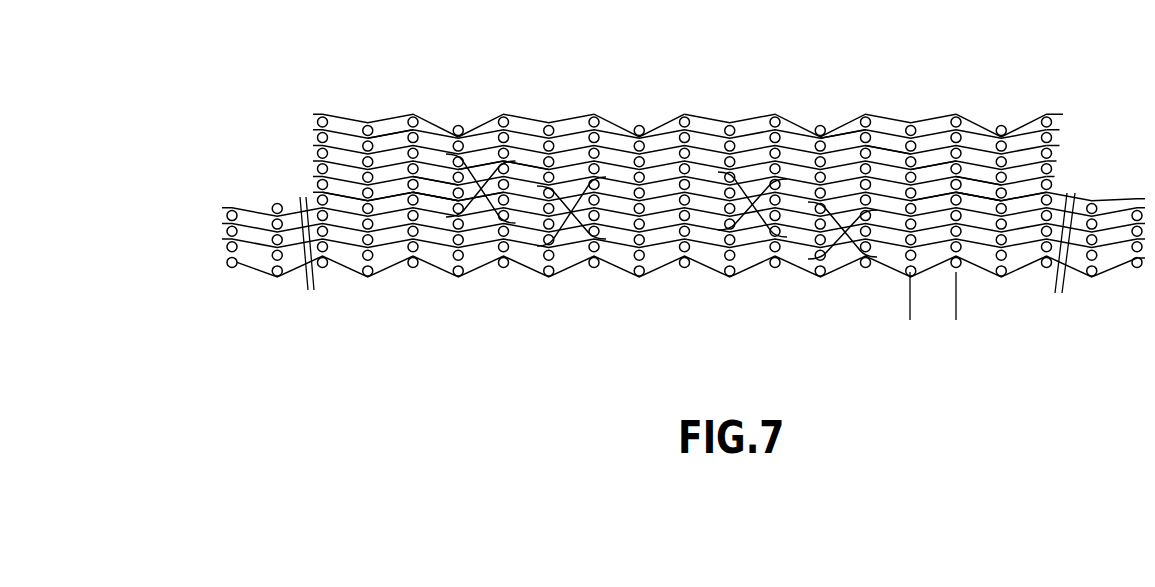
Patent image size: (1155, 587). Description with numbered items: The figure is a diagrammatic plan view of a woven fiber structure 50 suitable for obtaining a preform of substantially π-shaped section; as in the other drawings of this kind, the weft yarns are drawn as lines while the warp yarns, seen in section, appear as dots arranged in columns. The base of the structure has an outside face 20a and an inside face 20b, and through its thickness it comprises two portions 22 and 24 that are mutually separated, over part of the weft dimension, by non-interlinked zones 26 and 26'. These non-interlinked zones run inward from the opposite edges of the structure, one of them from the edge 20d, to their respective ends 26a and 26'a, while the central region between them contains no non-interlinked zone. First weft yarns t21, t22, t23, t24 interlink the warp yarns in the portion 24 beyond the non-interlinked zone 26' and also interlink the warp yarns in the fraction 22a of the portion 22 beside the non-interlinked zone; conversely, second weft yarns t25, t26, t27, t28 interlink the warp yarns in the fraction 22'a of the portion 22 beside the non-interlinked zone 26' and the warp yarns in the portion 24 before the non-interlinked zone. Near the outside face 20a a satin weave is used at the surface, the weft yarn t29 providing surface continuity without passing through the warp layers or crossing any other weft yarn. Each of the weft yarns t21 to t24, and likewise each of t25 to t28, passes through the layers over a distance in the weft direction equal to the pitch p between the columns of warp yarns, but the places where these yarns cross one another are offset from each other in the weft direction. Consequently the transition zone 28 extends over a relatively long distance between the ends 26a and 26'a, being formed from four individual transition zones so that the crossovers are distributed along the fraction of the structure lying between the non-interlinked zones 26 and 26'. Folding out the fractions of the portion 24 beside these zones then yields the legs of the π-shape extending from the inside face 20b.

The portion of the fiber structure 22 is at (656, 157).
The portion of the fiber structure 24 is at (225, 208).
The fraction of the portion 22 22a is at (339, 130).
The fraction of the portion 22 22'a is at (1013, 107).
The outside face 20a is at (655, 119).
The inside face 20b is at (700, 280).
The edge of the fiber structure 20d is at (1078, 176).
The fiber structure 50 is at (691, 99).
The first weft yarn t21 is at (391, 142).
The first weft yarn t22 is at (470, 172).
The first weft yarn t23 is at (430, 177).
The first weft yarn t24 is at (507, 162).
The second weft yarn t25 is at (888, 148).
The second weft yarn t26 is at (923, 168).
The second weft yarn t27 is at (968, 176).
The second weft yarn t28 is at (985, 192).
The weft yarn t29 is at (839, 127).
The non-interlinked zone 26 is at (407, 266).
The end of the non-interlinked zone 26a is at (445, 203).
The non-interlinked zone 26' is at (1012, 266).
The end of the non-interlinked zone 26'a is at (968, 266).
The transition zone 28 is at (661, 275).
The pitch between the columns of warp yarns p is at (956, 312).